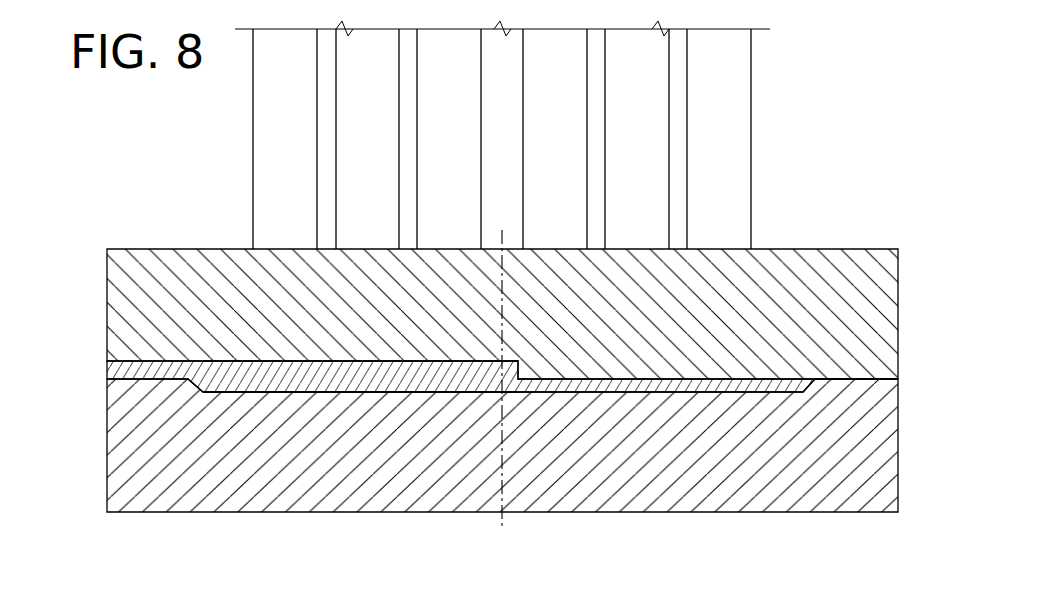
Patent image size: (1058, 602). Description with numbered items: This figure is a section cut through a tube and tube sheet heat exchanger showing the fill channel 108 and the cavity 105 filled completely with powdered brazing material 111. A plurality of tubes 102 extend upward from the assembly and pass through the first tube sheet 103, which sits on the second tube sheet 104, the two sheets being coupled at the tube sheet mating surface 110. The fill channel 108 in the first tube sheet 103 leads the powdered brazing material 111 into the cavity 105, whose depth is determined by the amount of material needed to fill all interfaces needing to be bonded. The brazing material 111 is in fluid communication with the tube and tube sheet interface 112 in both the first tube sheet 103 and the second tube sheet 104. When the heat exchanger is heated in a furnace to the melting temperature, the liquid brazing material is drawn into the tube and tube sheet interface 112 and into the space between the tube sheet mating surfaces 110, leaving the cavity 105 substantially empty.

The tubes 102 is at (367, 134).
The first tube sheet 103 is at (176, 267).
The second tube sheet 104 is at (162, 477).
The cavity 105 is at (306, 383).
The fill channel 108 is at (143, 371).
The tube sheet mating surface 110 is at (834, 379).
The powdered brazing material 111 is at (409, 373).
The tube and tube sheet interface 112 is at (862, 380).